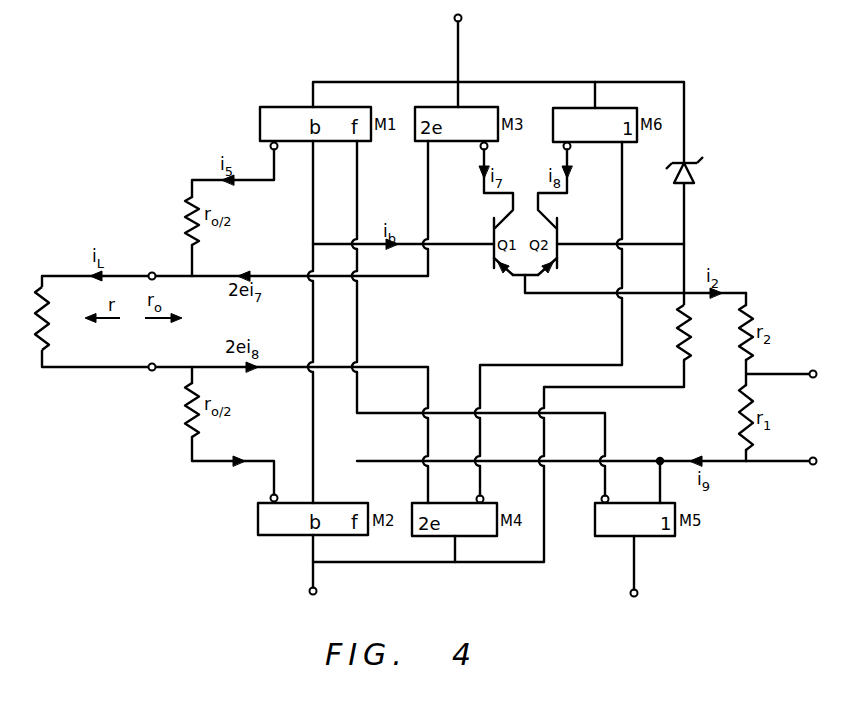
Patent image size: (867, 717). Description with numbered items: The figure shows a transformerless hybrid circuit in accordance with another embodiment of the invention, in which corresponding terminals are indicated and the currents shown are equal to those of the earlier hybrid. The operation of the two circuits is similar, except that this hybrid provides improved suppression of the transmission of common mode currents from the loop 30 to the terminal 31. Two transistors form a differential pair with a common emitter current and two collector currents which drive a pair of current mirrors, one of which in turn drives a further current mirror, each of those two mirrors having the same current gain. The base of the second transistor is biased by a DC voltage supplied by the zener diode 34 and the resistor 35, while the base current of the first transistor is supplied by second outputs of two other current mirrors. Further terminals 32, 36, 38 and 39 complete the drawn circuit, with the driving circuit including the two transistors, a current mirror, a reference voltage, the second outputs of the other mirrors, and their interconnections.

The loop 30 is at (94, 342).
The terminal 31 is at (794, 462).
The output terminal 32 is at (794, 375).
The zener diode 34 is at (699, 172).
The resistor 35 is at (679, 324).
The supply terminal 36 is at (463, 18).
The terminal 38 is at (640, 593).
The terminal 39 is at (306, 592).